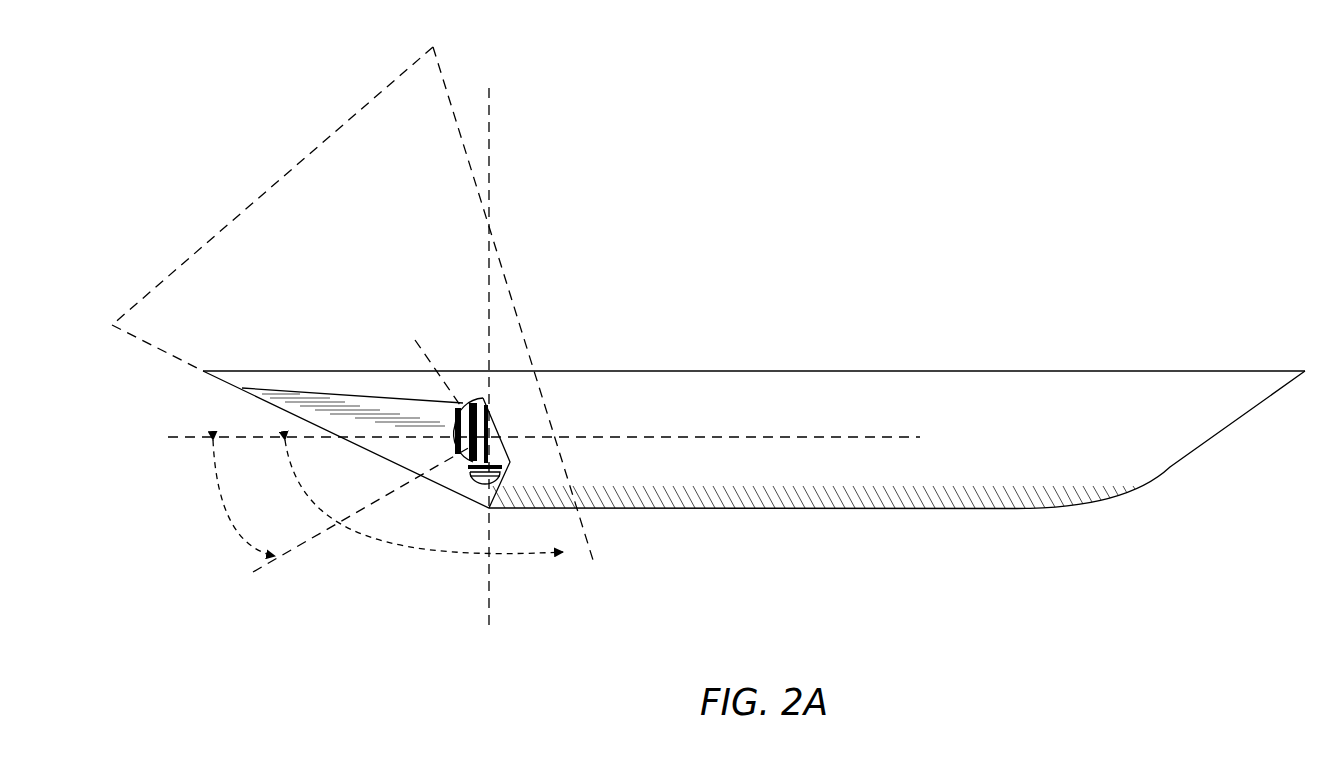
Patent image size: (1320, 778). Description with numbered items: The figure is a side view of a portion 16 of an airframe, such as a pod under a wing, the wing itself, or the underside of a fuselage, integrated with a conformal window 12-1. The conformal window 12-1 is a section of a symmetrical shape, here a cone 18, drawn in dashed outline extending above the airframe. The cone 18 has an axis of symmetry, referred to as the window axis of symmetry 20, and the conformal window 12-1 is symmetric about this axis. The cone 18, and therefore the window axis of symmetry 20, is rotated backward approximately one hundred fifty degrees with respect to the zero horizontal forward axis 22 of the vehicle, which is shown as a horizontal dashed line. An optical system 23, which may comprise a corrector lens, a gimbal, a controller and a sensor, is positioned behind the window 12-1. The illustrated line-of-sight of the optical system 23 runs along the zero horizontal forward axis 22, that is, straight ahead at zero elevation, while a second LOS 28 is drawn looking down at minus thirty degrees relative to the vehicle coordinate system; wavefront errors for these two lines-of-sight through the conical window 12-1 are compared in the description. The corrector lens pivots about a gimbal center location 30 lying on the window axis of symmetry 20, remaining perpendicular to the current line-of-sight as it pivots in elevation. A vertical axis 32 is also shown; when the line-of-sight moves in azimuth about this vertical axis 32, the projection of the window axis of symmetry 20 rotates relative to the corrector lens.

The portion of an airframe 16 is at (1172, 465).
The gimbal center location 30 is at (499, 430).
The optical system 23 is at (452, 418).
The vertical axis 32 is at (490, 116).
The cone 18 is at (500, 258).
The window axis of symmetry 20 is at (427, 360).
The zero horizontal forward axis 22 is at (192, 435).
The LOS 28 is at (293, 548).
The conformal window 12-1 is at (397, 448).